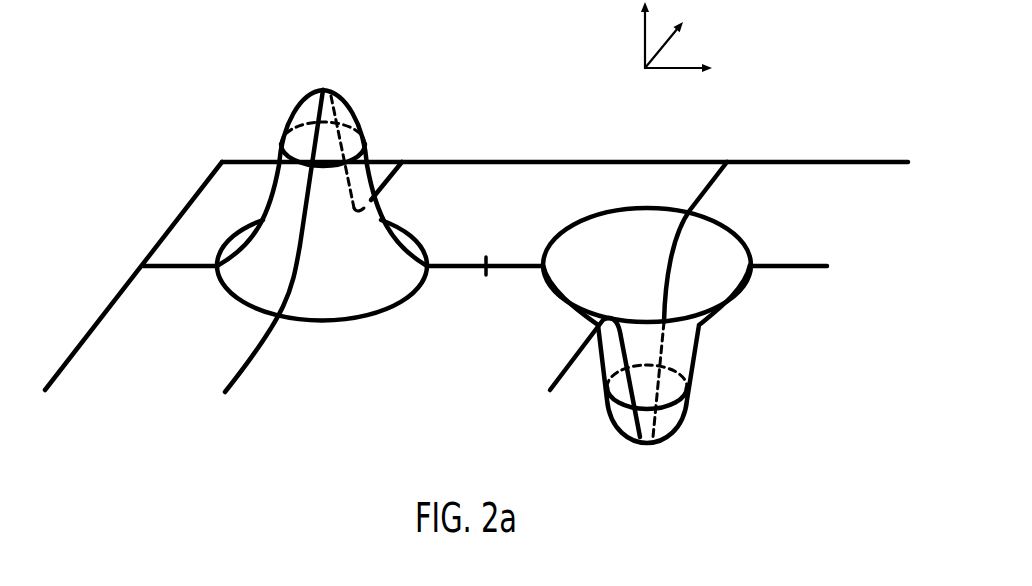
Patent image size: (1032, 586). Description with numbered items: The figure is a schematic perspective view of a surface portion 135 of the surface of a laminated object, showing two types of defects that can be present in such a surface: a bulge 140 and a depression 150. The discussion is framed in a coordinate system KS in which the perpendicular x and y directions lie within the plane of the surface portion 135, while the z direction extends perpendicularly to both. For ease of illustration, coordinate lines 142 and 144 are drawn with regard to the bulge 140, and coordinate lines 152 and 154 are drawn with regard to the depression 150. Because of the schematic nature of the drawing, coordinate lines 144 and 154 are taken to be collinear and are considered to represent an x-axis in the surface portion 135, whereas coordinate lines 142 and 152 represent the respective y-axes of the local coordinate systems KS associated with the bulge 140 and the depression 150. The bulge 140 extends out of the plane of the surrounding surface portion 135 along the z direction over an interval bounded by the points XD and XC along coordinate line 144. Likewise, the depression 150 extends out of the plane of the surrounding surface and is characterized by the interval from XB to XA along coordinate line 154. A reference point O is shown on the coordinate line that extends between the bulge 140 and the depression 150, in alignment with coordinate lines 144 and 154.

The surface portion 135 is at (512, 160).
The bulge 140 is at (264, 114).
The coordinate line 142 is at (394, 178).
The coordinate line 144 is at (168, 263).
The depression 150 is at (697, 444).
The coordinate line 152 is at (718, 181).
The coordinate line 154 is at (808, 265).
The reference point O is at (487, 256).
The coordinate system KS is at (627, 62).
The point xA XA is at (753, 274).
The point xB XB is at (538, 274).
The point xC XC is at (428, 274).
The point xD XD is at (215, 274).